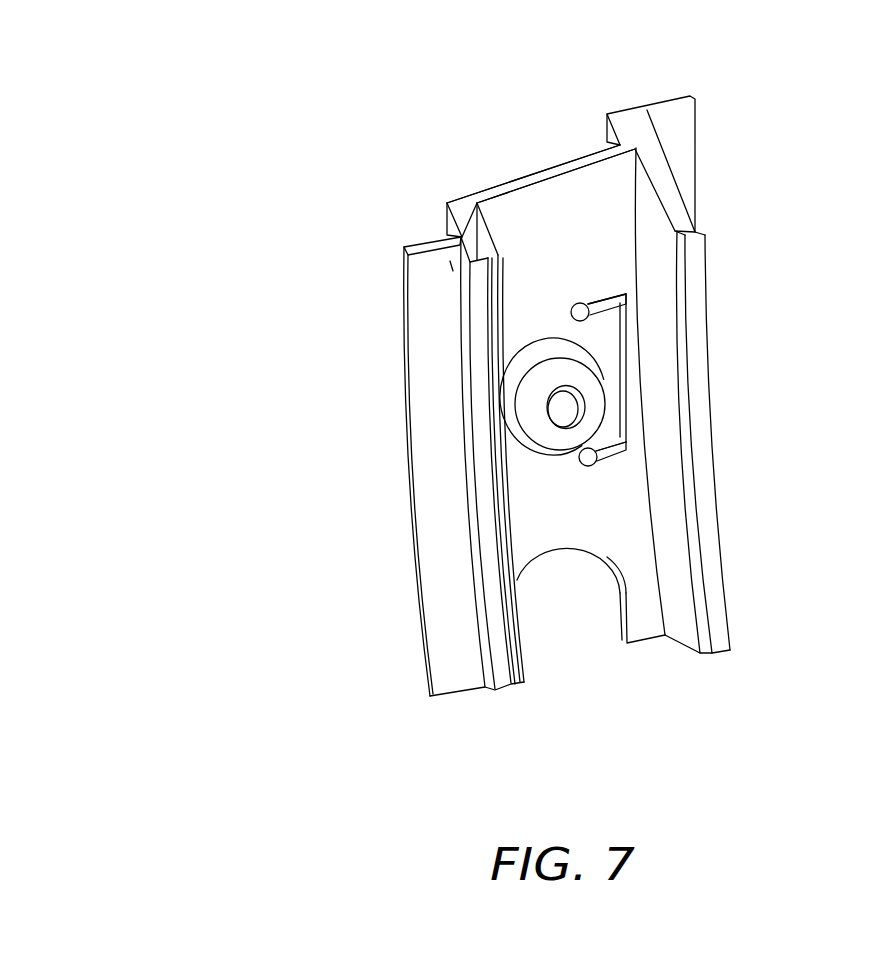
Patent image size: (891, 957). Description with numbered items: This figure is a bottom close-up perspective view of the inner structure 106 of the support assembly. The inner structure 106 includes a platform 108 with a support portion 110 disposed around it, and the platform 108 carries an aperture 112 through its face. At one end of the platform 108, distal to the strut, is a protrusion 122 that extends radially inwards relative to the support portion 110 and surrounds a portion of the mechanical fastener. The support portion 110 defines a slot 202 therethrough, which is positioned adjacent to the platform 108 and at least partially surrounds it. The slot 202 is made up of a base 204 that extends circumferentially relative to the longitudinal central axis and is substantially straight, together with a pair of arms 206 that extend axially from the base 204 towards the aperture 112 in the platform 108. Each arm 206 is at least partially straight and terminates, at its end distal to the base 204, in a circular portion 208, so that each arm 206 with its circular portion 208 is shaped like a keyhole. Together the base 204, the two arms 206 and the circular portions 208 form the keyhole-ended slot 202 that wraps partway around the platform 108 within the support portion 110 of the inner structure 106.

The inner structure 106 is at (317, 173).
The support portion 110 is at (553, 167).
The platform 108 is at (610, 398).
The protrusion 122 is at (545, 377).
The aperture 112 is at (568, 412).
The base 204 is at (628, 378).
The slot 202 is at (579, 305).
The arms 206 is at (614, 311).
The circular portion 208 is at (597, 292).